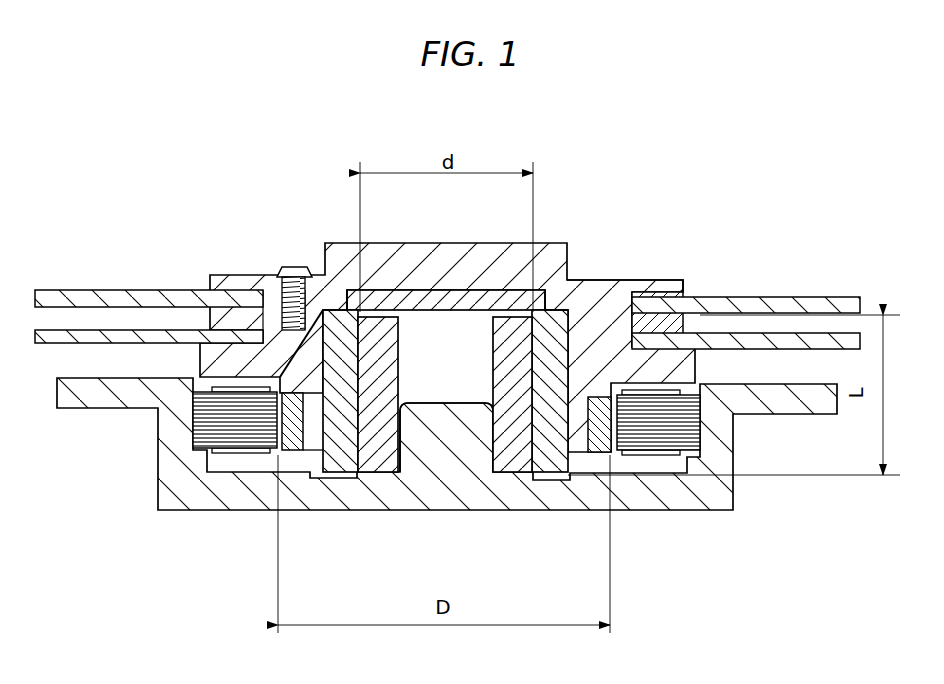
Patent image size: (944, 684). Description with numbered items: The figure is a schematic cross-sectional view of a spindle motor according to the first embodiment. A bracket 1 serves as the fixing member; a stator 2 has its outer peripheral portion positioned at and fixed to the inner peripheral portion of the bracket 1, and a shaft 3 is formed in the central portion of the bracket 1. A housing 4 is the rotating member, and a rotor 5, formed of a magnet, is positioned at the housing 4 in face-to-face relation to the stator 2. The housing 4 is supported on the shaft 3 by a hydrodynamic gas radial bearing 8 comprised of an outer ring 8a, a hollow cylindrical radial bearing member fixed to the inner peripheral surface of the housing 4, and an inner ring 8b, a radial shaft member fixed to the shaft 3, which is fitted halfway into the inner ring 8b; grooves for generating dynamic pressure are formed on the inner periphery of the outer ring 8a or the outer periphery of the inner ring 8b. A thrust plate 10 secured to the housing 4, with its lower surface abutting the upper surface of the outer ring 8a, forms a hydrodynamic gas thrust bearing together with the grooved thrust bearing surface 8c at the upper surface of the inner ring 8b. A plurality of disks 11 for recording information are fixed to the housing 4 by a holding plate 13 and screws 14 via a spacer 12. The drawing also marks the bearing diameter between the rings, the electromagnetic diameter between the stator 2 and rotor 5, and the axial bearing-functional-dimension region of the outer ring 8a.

The bracket 1 is at (727, 493).
The stator 2 is at (222, 435).
The shaft 3 is at (438, 452).
The housing 4 is at (507, 257).
The rotor 5 is at (299, 440).
The hydrodynamic gas radial bearing 8 is at (445, 398).
The outer ring 8a is at (343, 450).
The inner ring 8b is at (379, 455).
The thrust bearing surface 8c is at (362, 288).
The thrust plate 10 is at (393, 300).
The disks 11 is at (785, 297).
The spacer 12 is at (678, 325).
The holding plate 13 is at (600, 278).
The screws 14 is at (290, 268).